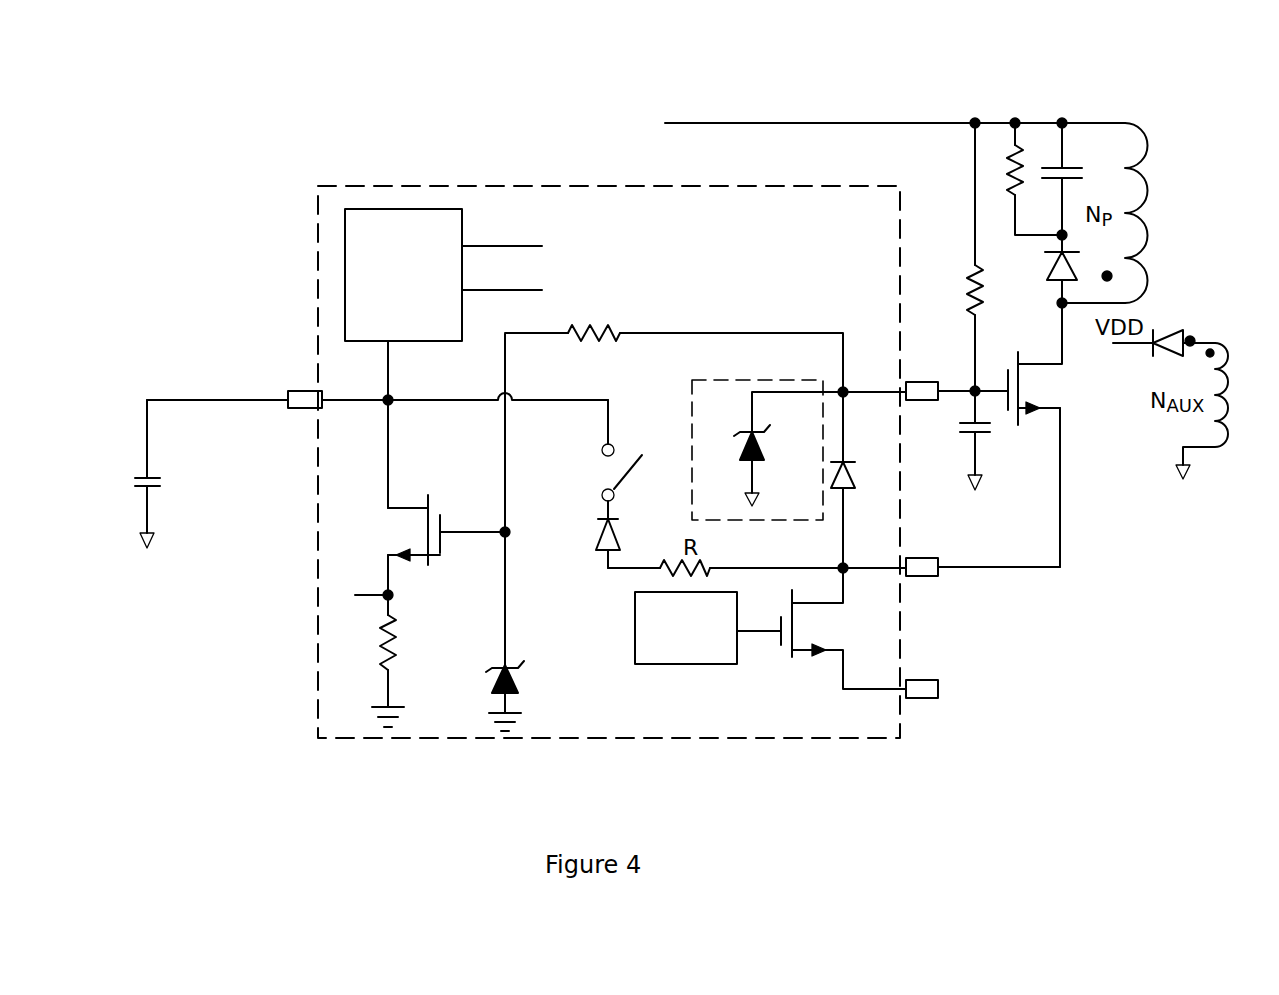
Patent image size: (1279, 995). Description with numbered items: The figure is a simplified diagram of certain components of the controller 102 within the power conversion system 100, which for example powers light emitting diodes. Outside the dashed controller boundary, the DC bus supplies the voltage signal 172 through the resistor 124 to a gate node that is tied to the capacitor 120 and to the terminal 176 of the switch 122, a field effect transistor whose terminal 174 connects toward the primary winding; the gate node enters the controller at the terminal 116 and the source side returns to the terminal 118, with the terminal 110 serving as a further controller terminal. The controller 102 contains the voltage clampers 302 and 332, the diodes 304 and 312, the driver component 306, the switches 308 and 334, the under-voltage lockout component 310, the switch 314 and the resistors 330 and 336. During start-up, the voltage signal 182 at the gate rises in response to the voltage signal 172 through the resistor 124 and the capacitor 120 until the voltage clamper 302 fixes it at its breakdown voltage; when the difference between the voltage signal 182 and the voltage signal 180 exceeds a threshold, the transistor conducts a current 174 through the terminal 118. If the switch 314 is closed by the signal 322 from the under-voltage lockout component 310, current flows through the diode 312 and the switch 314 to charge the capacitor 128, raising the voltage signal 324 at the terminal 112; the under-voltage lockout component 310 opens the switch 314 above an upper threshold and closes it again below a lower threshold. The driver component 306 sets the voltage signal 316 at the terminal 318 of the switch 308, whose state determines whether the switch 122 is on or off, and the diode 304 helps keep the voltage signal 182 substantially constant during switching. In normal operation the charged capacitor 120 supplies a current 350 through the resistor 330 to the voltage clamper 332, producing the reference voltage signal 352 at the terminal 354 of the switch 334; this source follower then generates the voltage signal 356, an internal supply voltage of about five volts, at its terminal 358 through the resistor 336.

The power conversion system 100 is at (1108, 733).
The controller 102 is at (318, 738).
The terminal 110 is at (938, 682).
The terminal VDD 112 is at (298, 408).
The terminal GATE 116 is at (906, 386).
The terminal SW 118 is at (930, 576).
The capacitor 120 is at (990, 436).
The switch 122 is at (1058, 405).
The resistor 124 is at (975, 266).
The capacitor 128 is at (155, 486).
The voltage signal 172 is at (876, 105).
The terminal 174 is at (1060, 510).
The terminal 176 is at (1008, 368).
The voltage signal 180 is at (1030, 567).
The voltage signal 182 is at (958, 408).
The voltage clamper 302 is at (738, 448).
The diode 304 is at (855, 490).
The driver component 306 is at (668, 664).
The switch 308 is at (792, 657).
The under-voltage lockout component 310 is at (435, 341).
The diode 312 is at (598, 552).
The switch 314 is at (624, 474).
The voltage signal 316 is at (758, 631).
The terminal 318 is at (780, 622).
The signal 322 is at (488, 290).
The voltage signal 324 is at (352, 400).
The resistor 330 is at (578, 341).
The voltage clamper 332 is at (518, 693).
The switch 334 is at (440, 553).
The resistor 336 is at (376, 668).
The current 350 is at (696, 333).
The reference voltage signal 352 is at (510, 536).
The terminal 354 is at (446, 508).
The voltage signal 356 is at (355, 595).
The terminal 358 is at (390, 555).